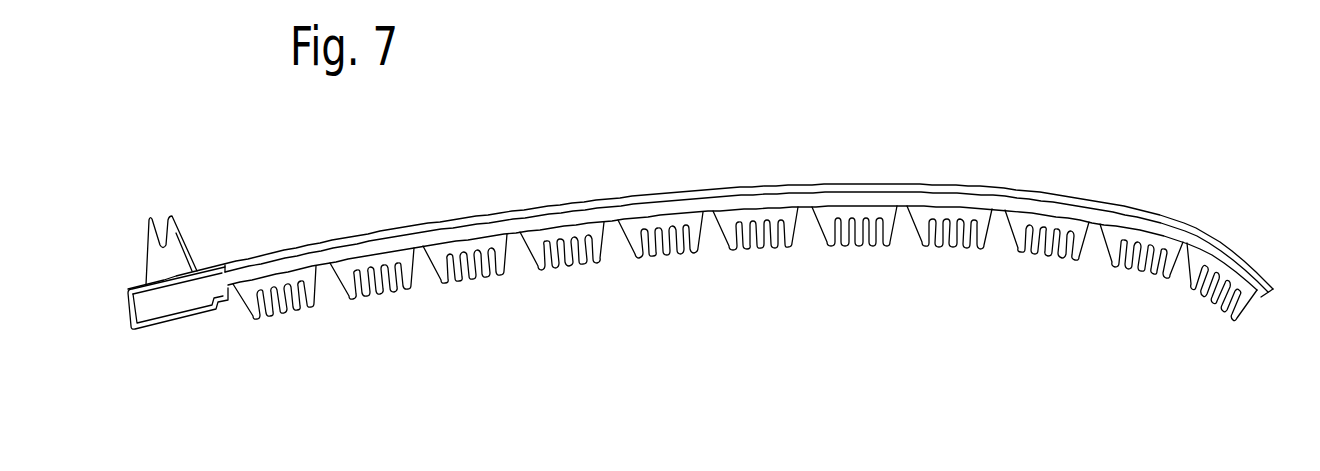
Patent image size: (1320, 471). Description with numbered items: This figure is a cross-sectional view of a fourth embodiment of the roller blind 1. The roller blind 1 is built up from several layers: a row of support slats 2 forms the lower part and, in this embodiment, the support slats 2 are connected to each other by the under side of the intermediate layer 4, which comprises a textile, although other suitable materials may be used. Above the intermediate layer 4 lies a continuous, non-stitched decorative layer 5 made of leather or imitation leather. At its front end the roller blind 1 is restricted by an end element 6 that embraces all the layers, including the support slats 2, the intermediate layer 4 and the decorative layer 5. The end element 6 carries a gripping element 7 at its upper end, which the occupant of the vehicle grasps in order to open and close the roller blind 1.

The roller blind 1 is at (703, 148).
The support slats 2 is at (889, 252).
The intermediate layer 4 is at (1257, 292).
The decorative layer 5 is at (1199, 225).
The end element 6 is at (131, 309).
The gripping element 7 is at (175, 215).